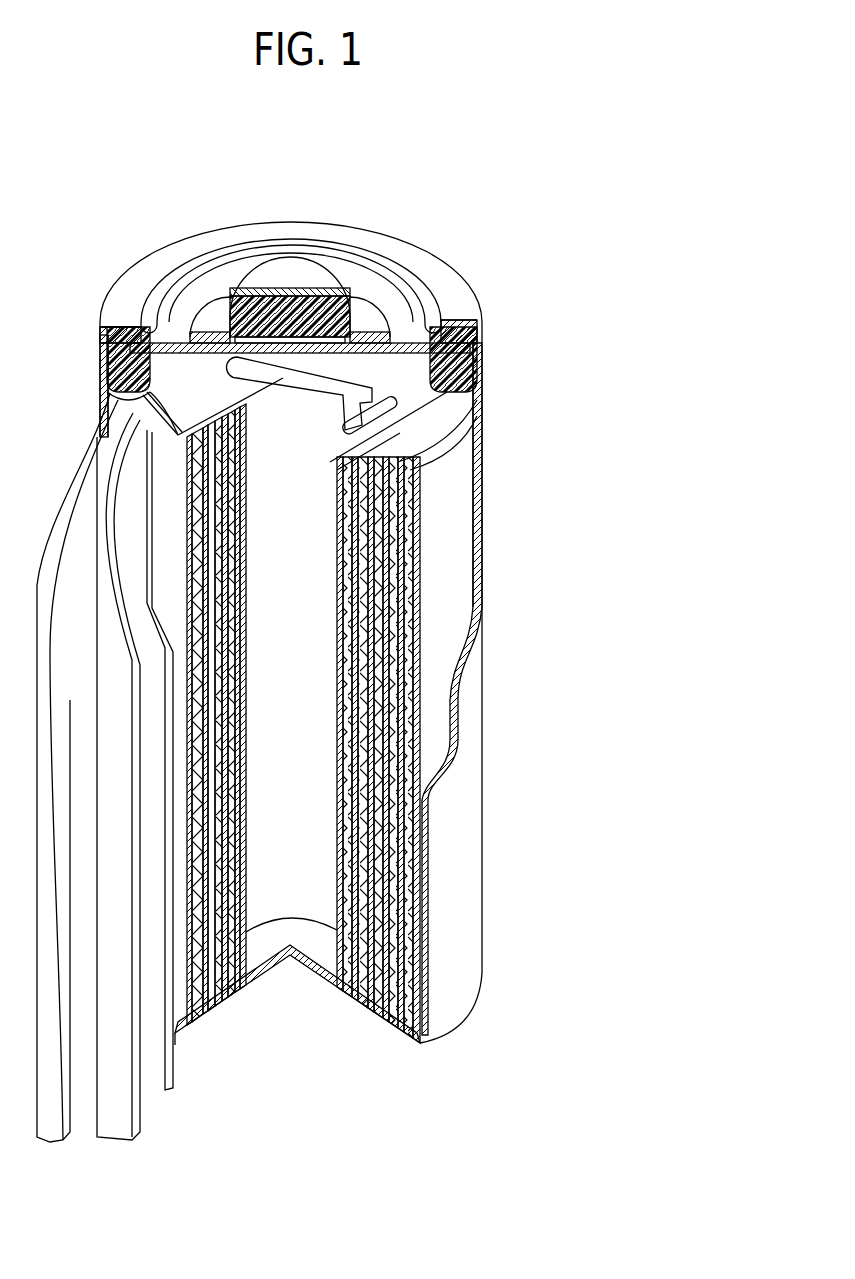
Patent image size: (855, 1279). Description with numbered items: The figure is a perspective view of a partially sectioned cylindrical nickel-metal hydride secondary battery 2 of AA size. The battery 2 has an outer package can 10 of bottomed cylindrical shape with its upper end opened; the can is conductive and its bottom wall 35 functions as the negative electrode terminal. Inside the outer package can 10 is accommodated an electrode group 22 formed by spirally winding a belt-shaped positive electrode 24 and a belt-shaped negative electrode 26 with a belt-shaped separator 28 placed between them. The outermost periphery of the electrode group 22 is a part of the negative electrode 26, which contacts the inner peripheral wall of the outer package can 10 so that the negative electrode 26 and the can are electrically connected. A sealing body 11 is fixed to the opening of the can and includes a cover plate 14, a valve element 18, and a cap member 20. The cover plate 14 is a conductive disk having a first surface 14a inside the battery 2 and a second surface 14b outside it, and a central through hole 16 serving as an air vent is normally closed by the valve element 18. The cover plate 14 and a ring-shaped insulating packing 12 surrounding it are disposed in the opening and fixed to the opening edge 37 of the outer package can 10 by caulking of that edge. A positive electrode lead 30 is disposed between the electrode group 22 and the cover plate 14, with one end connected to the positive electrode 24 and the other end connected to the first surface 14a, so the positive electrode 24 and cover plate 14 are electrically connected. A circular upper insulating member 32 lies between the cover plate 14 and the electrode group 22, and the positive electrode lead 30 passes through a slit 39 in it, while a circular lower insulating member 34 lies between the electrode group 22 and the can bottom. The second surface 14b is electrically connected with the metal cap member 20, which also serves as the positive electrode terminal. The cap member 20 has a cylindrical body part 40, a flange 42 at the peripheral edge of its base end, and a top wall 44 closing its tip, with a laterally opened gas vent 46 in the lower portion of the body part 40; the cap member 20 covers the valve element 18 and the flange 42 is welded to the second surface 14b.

The battery 2 is at (478, 225).
The outer package can 10 is at (478, 667).
The sealing body 11 is at (400, 308).
The insulating packing 12 is at (103, 360).
The cover plate 14 is at (157, 297).
The first surface 14a is at (150, 395).
The second surface 14b is at (135, 316).
The central through hole 16 is at (445, 358).
The valve element 18 is at (263, 293).
The cap member 20 is at (318, 268).
The electrode group 22 is at (460, 567).
The positive electrode 24 is at (173, 1085).
The negative electrode 26 is at (73, 1128).
The separator 28 is at (140, 1122).
The positive electrode lead 30 is at (405, 396).
The upper insulating member 32 is at (403, 418).
The lower insulating member 34 is at (310, 948).
The bottom wall 35 is at (230, 1007).
The opening edge 37 is at (453, 297).
The slit 39 is at (420, 440).
The body part 40 is at (360, 298).
The flange 42 is at (177, 317).
The top wall 44 is at (290, 280).
The gas vent 46 is at (205, 320).